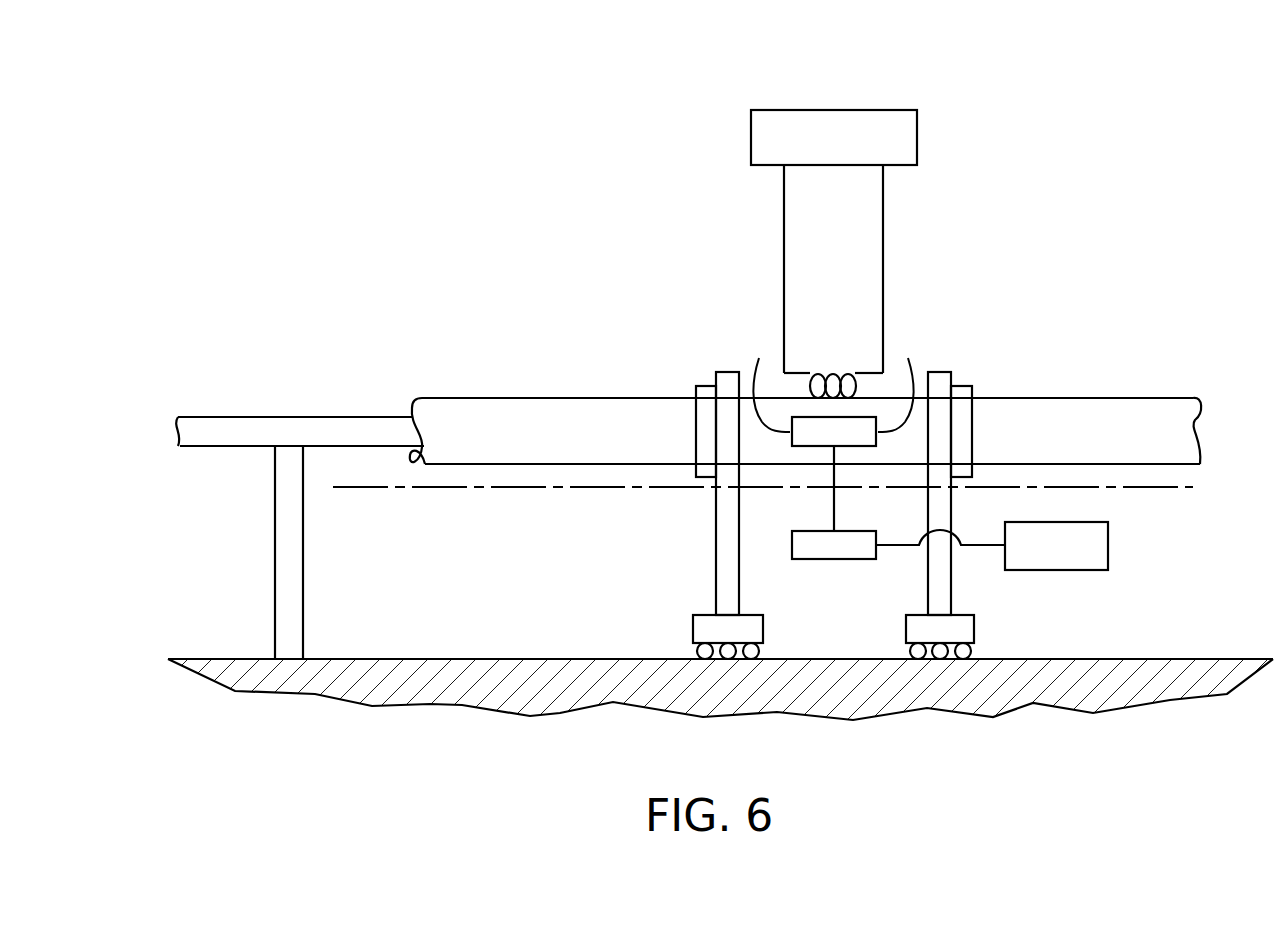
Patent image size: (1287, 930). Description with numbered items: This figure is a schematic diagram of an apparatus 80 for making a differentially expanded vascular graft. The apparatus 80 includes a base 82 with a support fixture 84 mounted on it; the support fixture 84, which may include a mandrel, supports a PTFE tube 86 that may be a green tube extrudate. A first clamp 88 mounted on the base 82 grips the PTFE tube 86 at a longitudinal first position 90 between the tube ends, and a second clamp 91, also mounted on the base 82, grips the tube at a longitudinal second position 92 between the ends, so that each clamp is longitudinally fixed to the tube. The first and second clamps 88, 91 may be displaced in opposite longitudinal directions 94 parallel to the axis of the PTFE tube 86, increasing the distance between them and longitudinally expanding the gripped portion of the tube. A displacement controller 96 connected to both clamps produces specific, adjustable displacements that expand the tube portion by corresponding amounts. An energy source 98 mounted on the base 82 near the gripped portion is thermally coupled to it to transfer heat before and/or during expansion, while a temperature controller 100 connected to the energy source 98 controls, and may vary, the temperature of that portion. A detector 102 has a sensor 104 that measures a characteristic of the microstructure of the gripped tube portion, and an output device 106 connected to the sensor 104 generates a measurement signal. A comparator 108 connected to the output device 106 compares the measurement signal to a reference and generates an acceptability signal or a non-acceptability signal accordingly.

The apparatus 80 is at (702, 364).
The base 82 is at (218, 658).
The support fixture 84 is at (278, 416).
The PTFE tube 86 is at (468, 396).
The first clamp 88 is at (696, 444).
The first position 90 is at (705, 385).
The second clamp 91 is at (972, 444).
The second position 92 is at (962, 385).
The longitudinal directions 94 is at (1193, 488).
The displacement controller 96 is at (716, 568).
The energy source 98 is at (874, 199).
The temperature controller 100 is at (917, 135).
The detector 102 is at (762, 382).
The sensor 104 is at (907, 382).
The output device 106 is at (832, 559).
The comparator 108 is at (1108, 558).